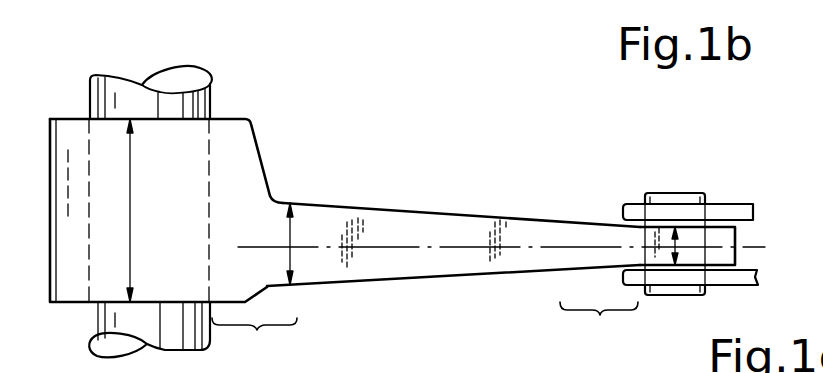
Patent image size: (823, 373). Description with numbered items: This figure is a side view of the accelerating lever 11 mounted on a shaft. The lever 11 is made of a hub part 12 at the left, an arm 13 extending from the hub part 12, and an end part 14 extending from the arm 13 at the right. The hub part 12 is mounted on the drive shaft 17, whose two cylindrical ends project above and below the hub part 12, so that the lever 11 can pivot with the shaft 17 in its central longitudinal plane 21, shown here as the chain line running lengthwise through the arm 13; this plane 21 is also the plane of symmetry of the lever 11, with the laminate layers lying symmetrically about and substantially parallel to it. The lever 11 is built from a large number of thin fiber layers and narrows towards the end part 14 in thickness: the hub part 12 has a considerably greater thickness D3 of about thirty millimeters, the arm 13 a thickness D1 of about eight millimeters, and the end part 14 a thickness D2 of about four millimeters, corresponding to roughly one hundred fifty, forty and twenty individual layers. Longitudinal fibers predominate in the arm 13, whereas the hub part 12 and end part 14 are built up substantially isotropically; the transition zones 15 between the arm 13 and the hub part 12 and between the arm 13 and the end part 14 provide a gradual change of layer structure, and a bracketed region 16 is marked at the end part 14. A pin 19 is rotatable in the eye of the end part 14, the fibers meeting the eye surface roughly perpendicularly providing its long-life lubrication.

The accelerating lever 11 is at (546, 115).
The hub part 12 is at (65, 118).
The arm 13 is at (452, 212).
The end part 14 is at (630, 238).
The transition zones 15 is at (254, 344).
The clamping region 16 is at (599, 329).
The drive shaft 17 is at (212, 97).
The pin 19 is at (672, 192).
The central longitudinal plane 21 is at (462, 247).
The lever thickness D1 is at (292, 231).
The lever thickness D2 is at (678, 246).
The lever thickness D3 is at (130, 182).